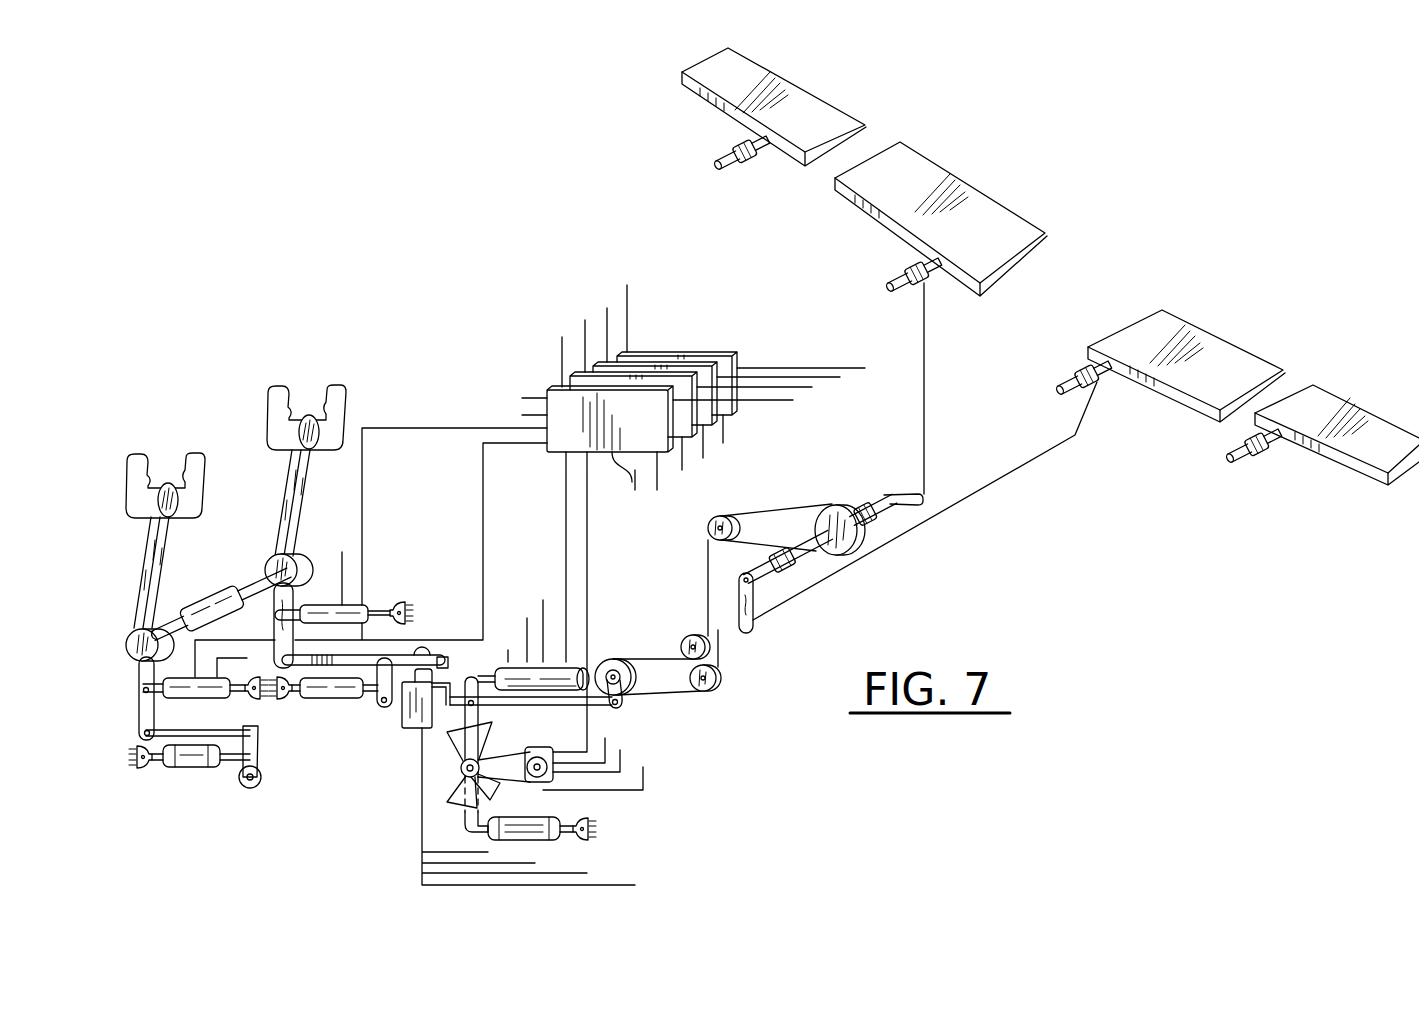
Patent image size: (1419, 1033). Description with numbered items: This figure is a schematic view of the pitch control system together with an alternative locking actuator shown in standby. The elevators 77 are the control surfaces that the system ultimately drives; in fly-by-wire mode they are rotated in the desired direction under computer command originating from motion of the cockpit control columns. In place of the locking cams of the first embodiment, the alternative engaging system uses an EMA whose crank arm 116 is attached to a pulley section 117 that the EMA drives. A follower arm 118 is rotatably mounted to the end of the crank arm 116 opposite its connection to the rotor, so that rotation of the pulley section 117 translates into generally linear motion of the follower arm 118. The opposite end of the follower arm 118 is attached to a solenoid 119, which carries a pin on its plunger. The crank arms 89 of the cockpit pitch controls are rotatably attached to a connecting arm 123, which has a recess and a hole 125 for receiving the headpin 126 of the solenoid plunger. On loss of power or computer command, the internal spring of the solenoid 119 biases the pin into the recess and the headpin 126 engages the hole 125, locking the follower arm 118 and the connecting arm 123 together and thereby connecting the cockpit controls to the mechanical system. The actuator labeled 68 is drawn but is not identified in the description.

The elevators 77 is at (778, 76).
The actuator 68 is at (352, 608).
The crank arm 89 is at (258, 641).
The connecting arm 123 is at (310, 665).
The hole 125 is at (421, 650).
The headpin 126 is at (445, 661).
The solenoid 119 is at (401, 724).
The pulley section 117 is at (462, 727).
The crank arm 116 is at (487, 712).
The follower arm 118 is at (568, 706).